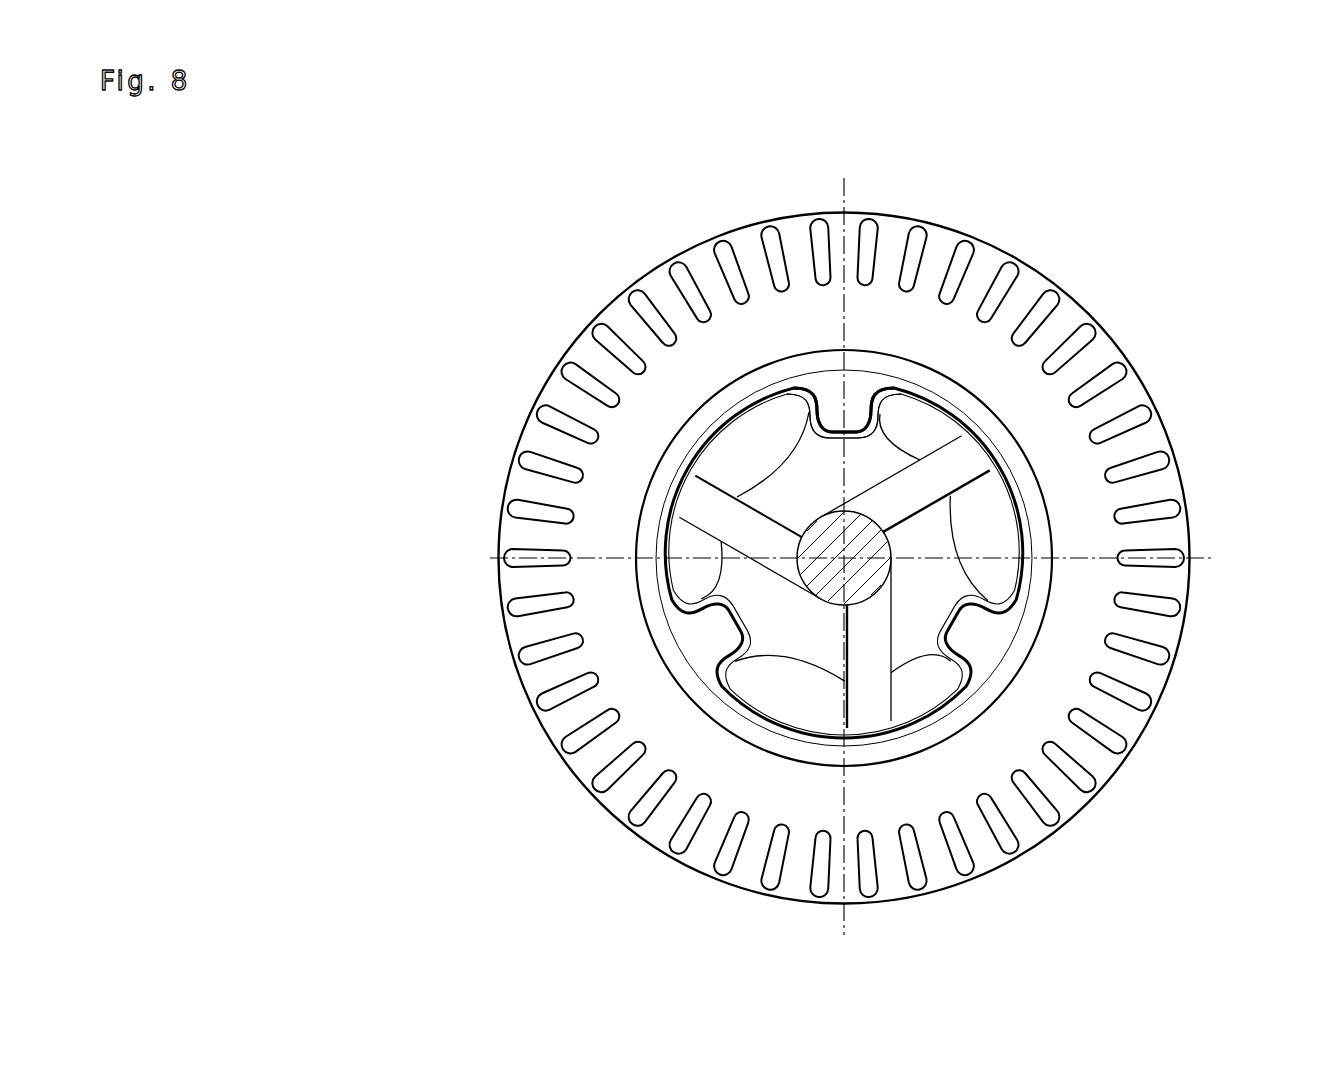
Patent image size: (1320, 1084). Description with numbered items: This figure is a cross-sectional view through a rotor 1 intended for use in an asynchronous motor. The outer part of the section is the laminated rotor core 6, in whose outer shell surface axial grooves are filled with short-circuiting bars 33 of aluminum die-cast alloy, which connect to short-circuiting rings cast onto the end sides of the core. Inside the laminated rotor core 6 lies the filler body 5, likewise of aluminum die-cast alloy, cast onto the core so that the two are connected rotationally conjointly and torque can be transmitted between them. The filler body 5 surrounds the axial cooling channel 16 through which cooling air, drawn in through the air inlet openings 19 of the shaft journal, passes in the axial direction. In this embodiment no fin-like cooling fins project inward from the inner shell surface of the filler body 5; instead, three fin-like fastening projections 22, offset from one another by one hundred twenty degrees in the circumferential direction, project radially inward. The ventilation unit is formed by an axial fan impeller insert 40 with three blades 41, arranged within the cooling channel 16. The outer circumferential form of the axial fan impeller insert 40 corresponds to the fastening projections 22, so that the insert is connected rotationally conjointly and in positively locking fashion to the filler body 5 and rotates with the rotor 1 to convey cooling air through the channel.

The rotor 1 is at (330, 392).
The filler body 5 is at (745, 377).
The laminated rotor core 6 is at (1118, 336).
The cooling channel 16 is at (770, 428).
The air inlet openings 19 is at (777, 685).
The fastening projections 22 is at (856, 405).
The short-circuiting bars 33 is at (1185, 556).
The axial fan impeller insert 40 is at (1016, 575).
The blades 41 is at (888, 636).